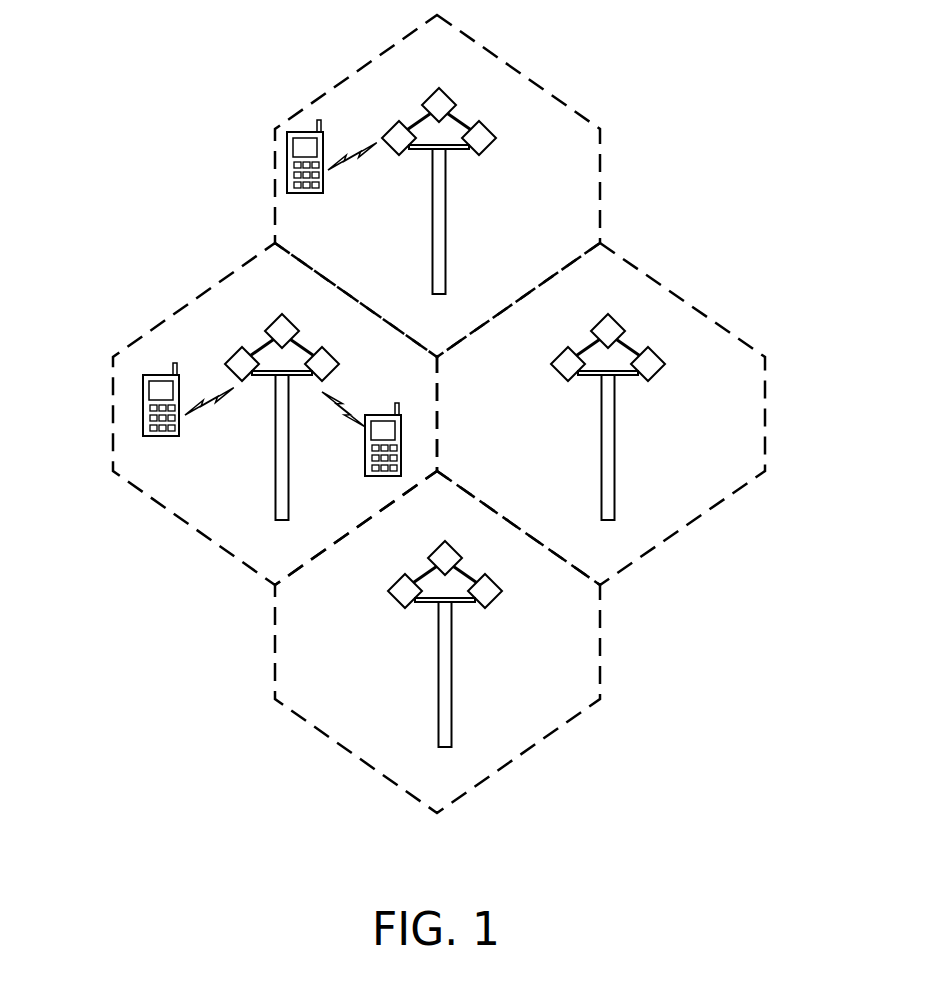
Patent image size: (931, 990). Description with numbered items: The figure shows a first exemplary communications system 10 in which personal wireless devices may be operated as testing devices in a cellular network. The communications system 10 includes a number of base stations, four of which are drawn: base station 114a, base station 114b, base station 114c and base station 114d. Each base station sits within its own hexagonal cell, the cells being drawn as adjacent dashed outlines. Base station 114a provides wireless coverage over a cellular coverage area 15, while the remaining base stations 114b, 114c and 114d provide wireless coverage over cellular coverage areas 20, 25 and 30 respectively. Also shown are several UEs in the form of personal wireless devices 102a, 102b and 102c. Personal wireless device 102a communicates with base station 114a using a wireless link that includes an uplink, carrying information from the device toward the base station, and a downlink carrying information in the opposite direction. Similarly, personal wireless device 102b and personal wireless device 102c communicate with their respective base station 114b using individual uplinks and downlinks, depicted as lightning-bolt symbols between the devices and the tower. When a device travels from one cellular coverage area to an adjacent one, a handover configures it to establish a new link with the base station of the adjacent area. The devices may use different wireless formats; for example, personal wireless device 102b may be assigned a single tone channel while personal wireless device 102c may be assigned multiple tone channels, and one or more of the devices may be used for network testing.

The communications system 10 is at (742, 87).
The cellular coverage area 15 is at (515, 68).
The cellular coverage area 20 is at (114, 415).
The cellular coverage area 25 is at (678, 298).
The cellular coverage area 30 is at (603, 662).
The personal wireless device 102a is at (310, 193).
The personal wireless device 102b is at (163, 437).
The personal wireless device 102c is at (365, 460).
The base station 114a is at (478, 174).
The base station 114b is at (262, 444).
The base station 114c is at (633, 427).
The base station 114d is at (472, 648).